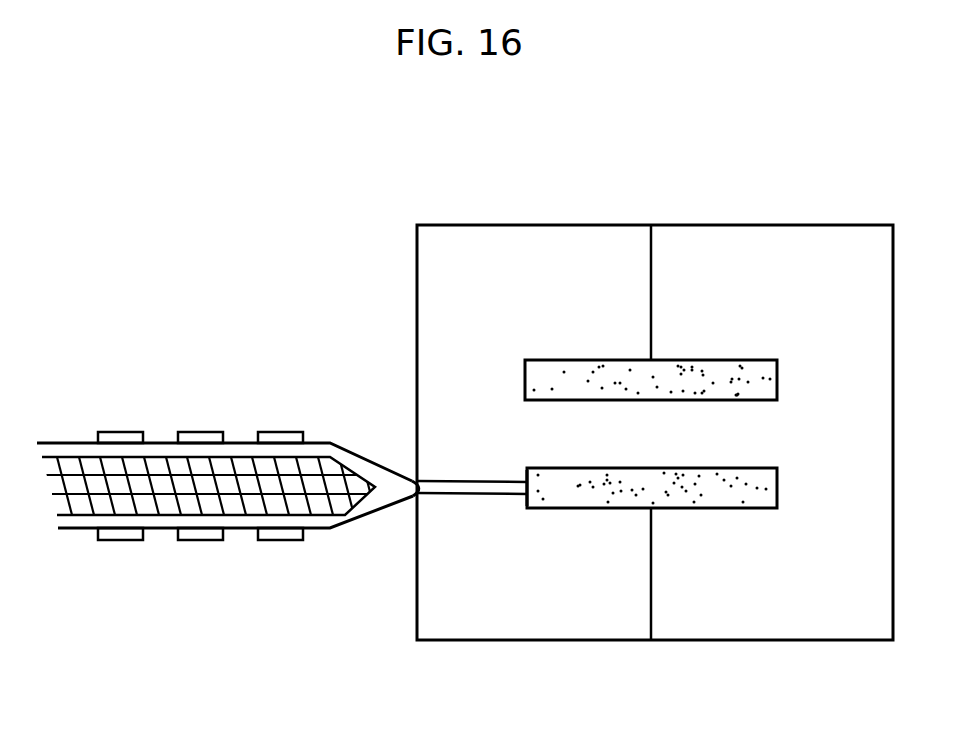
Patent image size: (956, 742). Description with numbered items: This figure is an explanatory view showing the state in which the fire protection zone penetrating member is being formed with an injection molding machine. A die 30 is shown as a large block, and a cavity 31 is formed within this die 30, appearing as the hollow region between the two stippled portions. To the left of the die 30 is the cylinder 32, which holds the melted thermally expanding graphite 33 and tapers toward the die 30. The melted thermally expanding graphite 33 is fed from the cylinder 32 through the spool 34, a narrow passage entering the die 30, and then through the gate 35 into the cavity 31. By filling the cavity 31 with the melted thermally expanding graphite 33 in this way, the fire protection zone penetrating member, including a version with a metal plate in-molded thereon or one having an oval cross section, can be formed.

The die 30 is at (550, 632).
The cavity 31 is at (713, 508).
The cylinder 32 is at (68, 442).
The melted thermally expanding graphite 33 is at (380, 497).
The spool 34 is at (467, 494).
The gate 35 is at (523, 470).